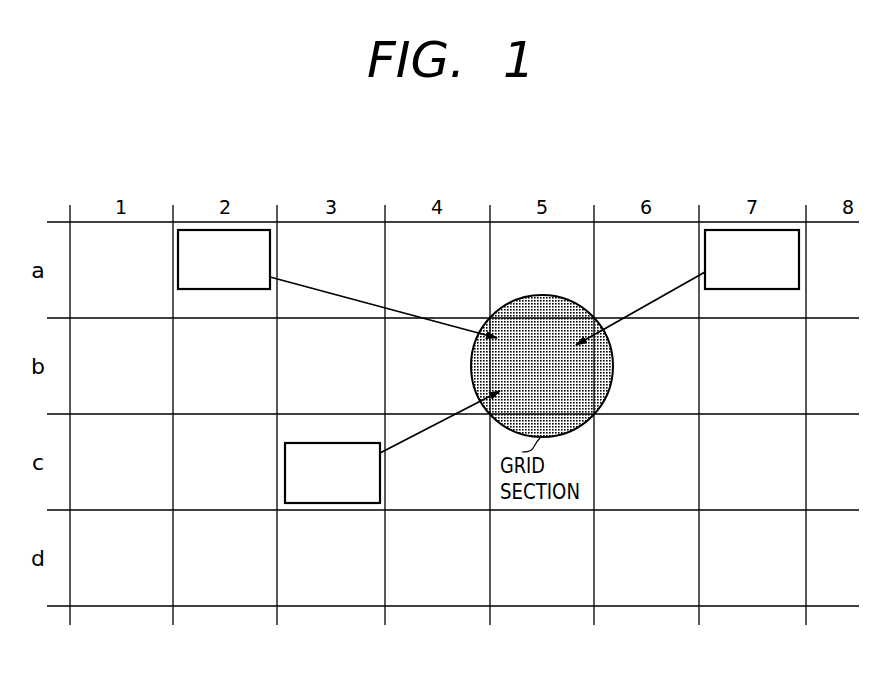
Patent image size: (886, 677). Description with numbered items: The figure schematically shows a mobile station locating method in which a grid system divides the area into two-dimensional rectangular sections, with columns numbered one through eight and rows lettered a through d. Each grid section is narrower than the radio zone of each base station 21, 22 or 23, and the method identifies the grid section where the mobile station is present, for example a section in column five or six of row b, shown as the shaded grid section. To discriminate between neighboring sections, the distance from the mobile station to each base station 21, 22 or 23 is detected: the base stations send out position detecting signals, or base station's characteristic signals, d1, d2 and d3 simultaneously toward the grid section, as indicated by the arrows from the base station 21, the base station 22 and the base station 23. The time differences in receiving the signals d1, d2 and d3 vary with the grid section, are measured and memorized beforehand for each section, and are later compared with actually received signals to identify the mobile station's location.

The base station 21 is at (340, 441).
The base station 22 is at (735, 289).
The base station 23 is at (202, 289).
The position detecting signal d1 is at (456, 411).
The position detecting signal d2 is at (651, 300).
The position detecting signal d3 is at (313, 289).